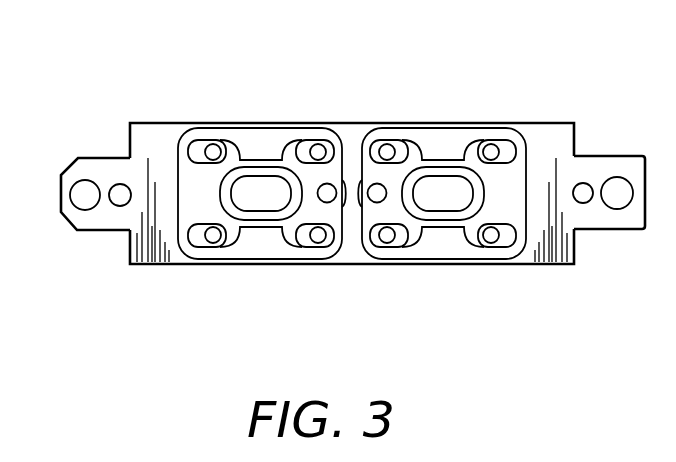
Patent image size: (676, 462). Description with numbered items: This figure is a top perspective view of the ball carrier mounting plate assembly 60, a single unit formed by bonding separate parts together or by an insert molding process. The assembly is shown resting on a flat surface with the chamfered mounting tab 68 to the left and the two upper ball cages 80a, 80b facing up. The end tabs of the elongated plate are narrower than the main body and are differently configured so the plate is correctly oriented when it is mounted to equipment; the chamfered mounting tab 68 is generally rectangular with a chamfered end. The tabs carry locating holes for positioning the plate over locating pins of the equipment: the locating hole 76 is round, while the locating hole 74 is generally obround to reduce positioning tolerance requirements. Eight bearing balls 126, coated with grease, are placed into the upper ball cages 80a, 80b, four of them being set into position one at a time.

The ball carrier mounting plate assembly 60 is at (152, 105).
The end tab 68 is at (70, 222).
The locating hole 74 is at (583, 190).
The locating hole 76 is at (113, 188).
The upper ball cage 80a is at (326, 252).
The upper ball cage 80b is at (505, 250).
The bearing balls 126 is at (315, 152).